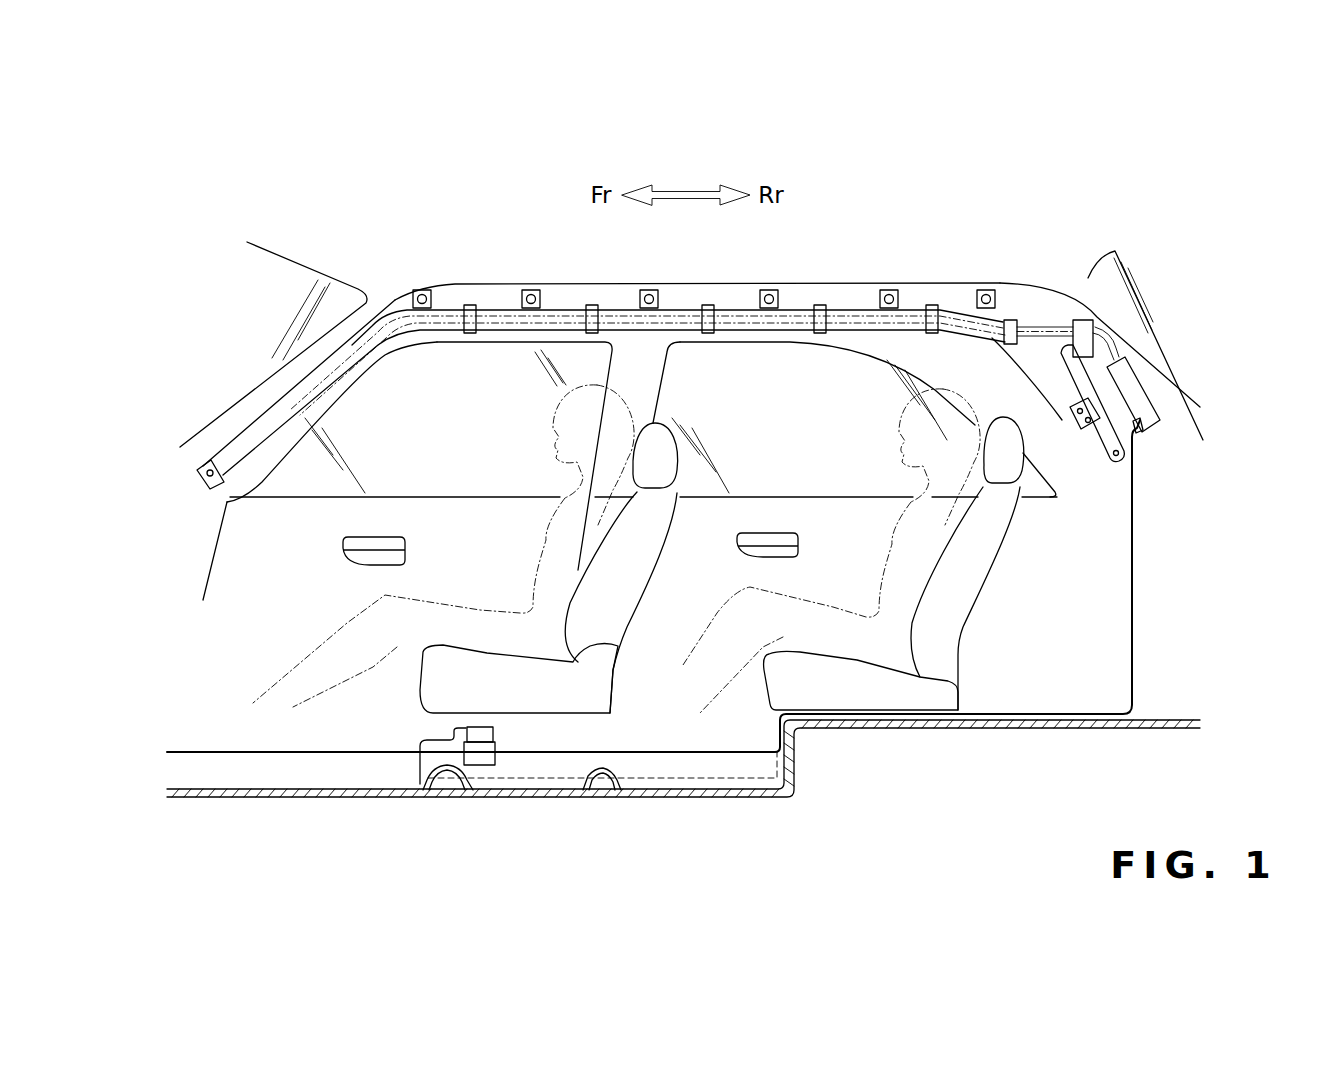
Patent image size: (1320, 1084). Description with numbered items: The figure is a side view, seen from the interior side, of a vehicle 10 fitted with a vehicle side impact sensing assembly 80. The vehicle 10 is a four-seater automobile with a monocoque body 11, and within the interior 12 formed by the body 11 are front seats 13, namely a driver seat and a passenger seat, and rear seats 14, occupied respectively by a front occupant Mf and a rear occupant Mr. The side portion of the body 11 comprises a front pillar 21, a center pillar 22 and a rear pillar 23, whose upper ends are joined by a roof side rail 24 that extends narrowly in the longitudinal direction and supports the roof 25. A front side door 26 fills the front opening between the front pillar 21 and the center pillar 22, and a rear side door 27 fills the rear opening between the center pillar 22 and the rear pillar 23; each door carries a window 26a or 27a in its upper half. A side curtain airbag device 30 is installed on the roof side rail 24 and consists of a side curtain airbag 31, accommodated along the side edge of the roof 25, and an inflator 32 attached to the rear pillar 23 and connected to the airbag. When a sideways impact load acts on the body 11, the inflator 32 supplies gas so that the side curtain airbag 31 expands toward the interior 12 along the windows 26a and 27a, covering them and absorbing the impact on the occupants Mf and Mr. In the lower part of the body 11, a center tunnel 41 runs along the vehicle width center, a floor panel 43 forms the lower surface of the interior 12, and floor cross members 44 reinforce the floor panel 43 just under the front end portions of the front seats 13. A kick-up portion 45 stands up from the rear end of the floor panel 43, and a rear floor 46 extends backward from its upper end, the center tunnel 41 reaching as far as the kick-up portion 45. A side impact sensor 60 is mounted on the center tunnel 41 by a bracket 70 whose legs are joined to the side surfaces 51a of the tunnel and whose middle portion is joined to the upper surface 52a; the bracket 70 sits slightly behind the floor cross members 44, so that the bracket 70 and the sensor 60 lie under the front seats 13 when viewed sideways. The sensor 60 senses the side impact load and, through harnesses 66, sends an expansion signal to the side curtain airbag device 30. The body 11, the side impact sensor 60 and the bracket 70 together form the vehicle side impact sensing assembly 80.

The vehicle 10 is at (180, 223).
The body 11 is at (312, 261).
The interior 12 is at (288, 589).
The front seats 13 is at (607, 622).
The rear seats 14 is at (953, 641).
The front pillars 21 is at (240, 432).
The center pillars 22 is at (641, 374).
The rear pillars 23 is at (1013, 366).
The roof side rails 24 is at (452, 305).
The roof 25 is at (552, 270).
The front side doors 26 is at (240, 545).
The windows 26a is at (451, 487).
The rear side doors 27 is at (853, 547).
The windows 27a is at (744, 488).
The side curtain airbag devices 30 is at (1195, 197).
The side curtain airbags 31 is at (946, 306).
The inflators 32 is at (1130, 392).
The center tunnel 41 is at (254, 786).
The floor panel 43 is at (294, 797).
The floor cross members 44 is at (447, 770).
The kick-up portion 45 is at (797, 757).
The rear floor 46 is at (1012, 733).
The side surfaces of the center tunnel 51a is at (192, 777).
The upper surface of the center tunnel 52a is at (237, 752).
The side impact sensor 60 is at (494, 735).
The harnesses 66 is at (1135, 560).
The bracket 70 is at (481, 762).
The vehicle side impact sensing assembly 80 is at (522, 772).
The front occupant Mf is at (550, 445).
The rear occupant Mr is at (907, 447).